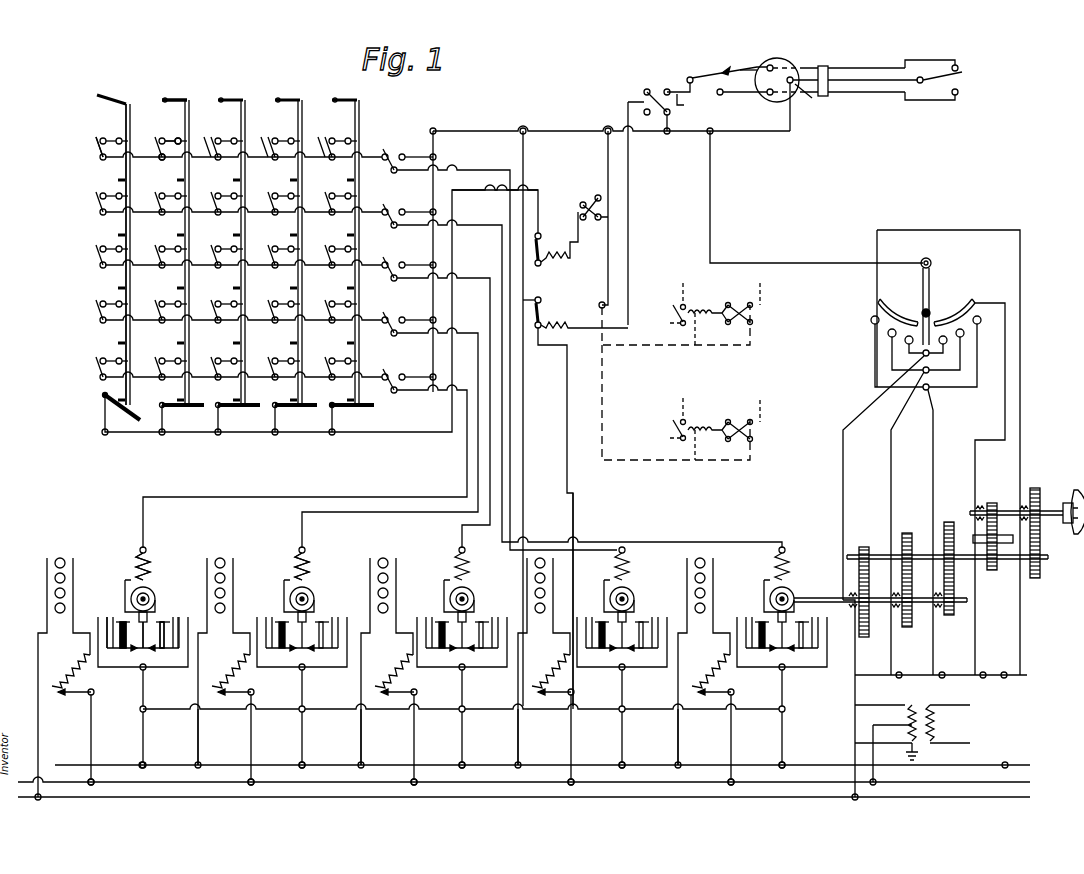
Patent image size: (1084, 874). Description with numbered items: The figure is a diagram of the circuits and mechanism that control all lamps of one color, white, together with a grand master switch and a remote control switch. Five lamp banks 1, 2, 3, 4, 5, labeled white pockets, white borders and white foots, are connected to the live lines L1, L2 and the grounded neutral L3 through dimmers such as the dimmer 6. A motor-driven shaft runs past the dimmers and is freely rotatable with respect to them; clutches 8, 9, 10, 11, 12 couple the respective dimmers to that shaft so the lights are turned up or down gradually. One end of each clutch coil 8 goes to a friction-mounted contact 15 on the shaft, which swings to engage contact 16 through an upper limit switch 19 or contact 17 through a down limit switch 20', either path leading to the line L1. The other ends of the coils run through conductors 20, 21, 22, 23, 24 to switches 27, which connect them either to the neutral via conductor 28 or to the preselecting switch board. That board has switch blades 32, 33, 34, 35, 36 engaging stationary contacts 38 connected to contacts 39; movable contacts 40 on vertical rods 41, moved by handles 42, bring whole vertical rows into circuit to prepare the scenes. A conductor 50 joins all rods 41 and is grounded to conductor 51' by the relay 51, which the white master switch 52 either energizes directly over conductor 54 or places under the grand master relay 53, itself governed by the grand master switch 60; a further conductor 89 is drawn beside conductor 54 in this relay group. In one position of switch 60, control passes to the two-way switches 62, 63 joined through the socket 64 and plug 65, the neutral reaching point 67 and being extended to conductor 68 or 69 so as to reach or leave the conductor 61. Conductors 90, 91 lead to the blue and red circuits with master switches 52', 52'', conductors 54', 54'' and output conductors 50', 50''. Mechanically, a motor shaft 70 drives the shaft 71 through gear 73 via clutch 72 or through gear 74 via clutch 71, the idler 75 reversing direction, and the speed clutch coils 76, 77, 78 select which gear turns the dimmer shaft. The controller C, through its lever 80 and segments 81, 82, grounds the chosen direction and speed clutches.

The lamp bank 1 is at (130, 634).
The lamp bank 2 is at (252, 627).
The lamp bank 3 is at (247, 266).
The lamp bank 4 is at (572, 633).
The lamp bank 5 is at (735, 635).
The dimmer 6 is at (64, 696).
The clutch 8 is at (150, 568).
The clutch 9 is at (310, 568).
The clutch 10 is at (455, 566).
The clutch 11 is at (614, 570).
The clutch 12 is at (790, 568).
The contact 15 is at (148, 630).
The contact 16 is at (124, 652).
The contact 17 is at (162, 652).
The upper limit switch 19 is at (115, 652).
The conductor 20 is at (306, 460).
The down limit switch 20' is at (201, 637).
The conductor 21 is at (462, 338).
The conductor 22 is at (466, 282).
The conductor 23 is at (474, 225).
The conductor 24 is at (480, 170).
The switch 27 is at (384, 150).
The conductor 28 is at (480, 131).
The switch blade 32 is at (96, 148).
The switch blade 33 is at (160, 150).
The switch blade 34 is at (216, 146).
The switch blade 35 is at (268, 146).
The switch blade 36 is at (326, 146).
The stationary contact 38 is at (178, 136).
The stationary contact 39 is at (185, 100).
The movable contact 40 is at (186, 140).
The vertical conducting member 41 is at (190, 130).
The handle 42 is at (143, 417).
The conductor 50 is at (320, 322).
The conductor 50' is at (696, 313).
The conductor 50'' is at (697, 429).
The electromagnetic switch 51 is at (524, 225).
The conductor 51' is at (553, 518).
The white master switch 52 is at (620, 196).
The blue master switch 52' is at (766, 319).
The red master switch 52'' is at (765, 435).
The electromagnetic switch 53 is at (566, 333).
The conductor 54 is at (587, 219).
The conductor 54' is at (780, 292).
The conductor 54'' is at (783, 405).
The grand master switch 60 is at (650, 90).
The conductor 61 is at (691, 103).
The switch 62 is at (694, 74).
The switch 63 is at (982, 77).
The socket 64 is at (780, 66).
The plug 65 is at (826, 66).
The socket point 67 is at (811, 99).
The conductor 68 is at (742, 68).
The conductor 69 is at (738, 96).
The shaft 70 is at (1060, 512).
The shaft 71 is at (940, 514).
The clutch 72 is at (1025, 505).
The gear 73 is at (1040, 488).
The gear 74 is at (992, 500).
The idler 75 is at (992, 546).
The magnetic clutch coil 76 is at (937, 608).
The magnetic clutch coil 77 is at (895, 608).
The magnetic clutch coil 78 is at (851, 608).
The lever 80 is at (933, 274).
The segment 81 is at (888, 304).
The segment 82 is at (950, 306).
The conductor 89 is at (630, 152).
The conductor 90 is at (644, 350).
The conductor 91 is at (640, 465).
The controller C is at (865, 403).
The live line L1 is at (100, 763).
The live line L2 is at (112, 781).
The grounded neutral line L3 is at (160, 795).